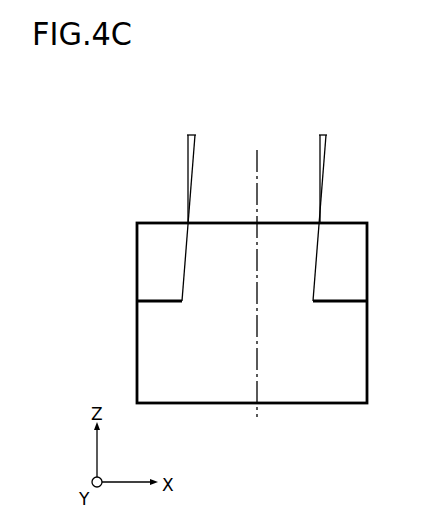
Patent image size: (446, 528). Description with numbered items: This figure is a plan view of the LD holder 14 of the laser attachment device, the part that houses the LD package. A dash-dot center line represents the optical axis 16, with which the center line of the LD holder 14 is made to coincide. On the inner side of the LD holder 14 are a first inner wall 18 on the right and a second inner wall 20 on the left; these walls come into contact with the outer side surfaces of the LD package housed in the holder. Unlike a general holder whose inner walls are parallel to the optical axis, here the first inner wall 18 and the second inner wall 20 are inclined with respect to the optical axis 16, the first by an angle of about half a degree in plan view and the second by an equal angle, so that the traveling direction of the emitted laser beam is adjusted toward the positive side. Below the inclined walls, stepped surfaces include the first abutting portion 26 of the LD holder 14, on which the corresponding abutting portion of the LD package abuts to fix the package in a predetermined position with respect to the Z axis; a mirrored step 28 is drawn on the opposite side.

The LD holder 14 is at (226, 241).
The optical axis 16 is at (257, 160).
The first inner wall 18 is at (315, 273).
The second inner wall 20 is at (184, 272).
The first abutting portion 26 is at (351, 301).
The second step surface 28 is at (160, 301).